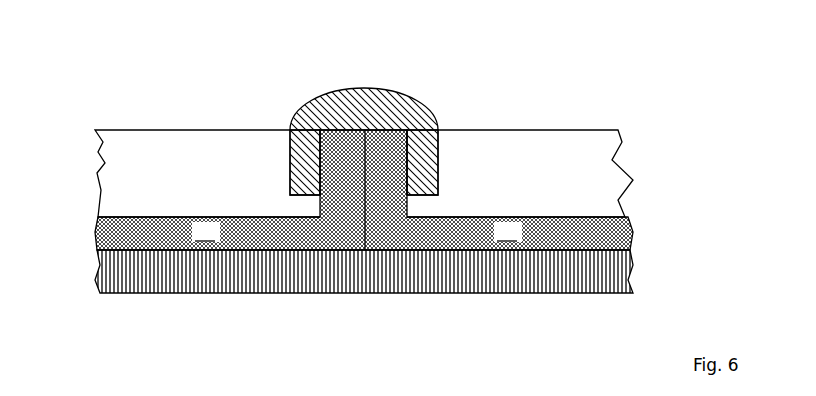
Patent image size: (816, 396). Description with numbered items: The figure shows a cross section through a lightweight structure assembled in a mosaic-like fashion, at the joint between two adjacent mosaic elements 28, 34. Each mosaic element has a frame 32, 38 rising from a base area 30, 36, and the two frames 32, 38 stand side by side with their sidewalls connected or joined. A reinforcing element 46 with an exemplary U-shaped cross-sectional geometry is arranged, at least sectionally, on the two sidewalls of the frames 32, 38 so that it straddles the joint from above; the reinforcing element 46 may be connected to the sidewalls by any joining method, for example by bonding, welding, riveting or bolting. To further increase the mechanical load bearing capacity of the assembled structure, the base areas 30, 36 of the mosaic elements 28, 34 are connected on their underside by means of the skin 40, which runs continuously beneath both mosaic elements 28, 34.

The mosaic element 28 is at (562, 160).
The base area 30 is at (508, 232).
The frame 32 is at (433, 125).
The mosaic element 34 is at (155, 157).
The base area 36 is at (364, 190).
The frame 38 is at (292, 124).
The skin 40 is at (345, 275).
The reinforcing element 46 is at (357, 88).